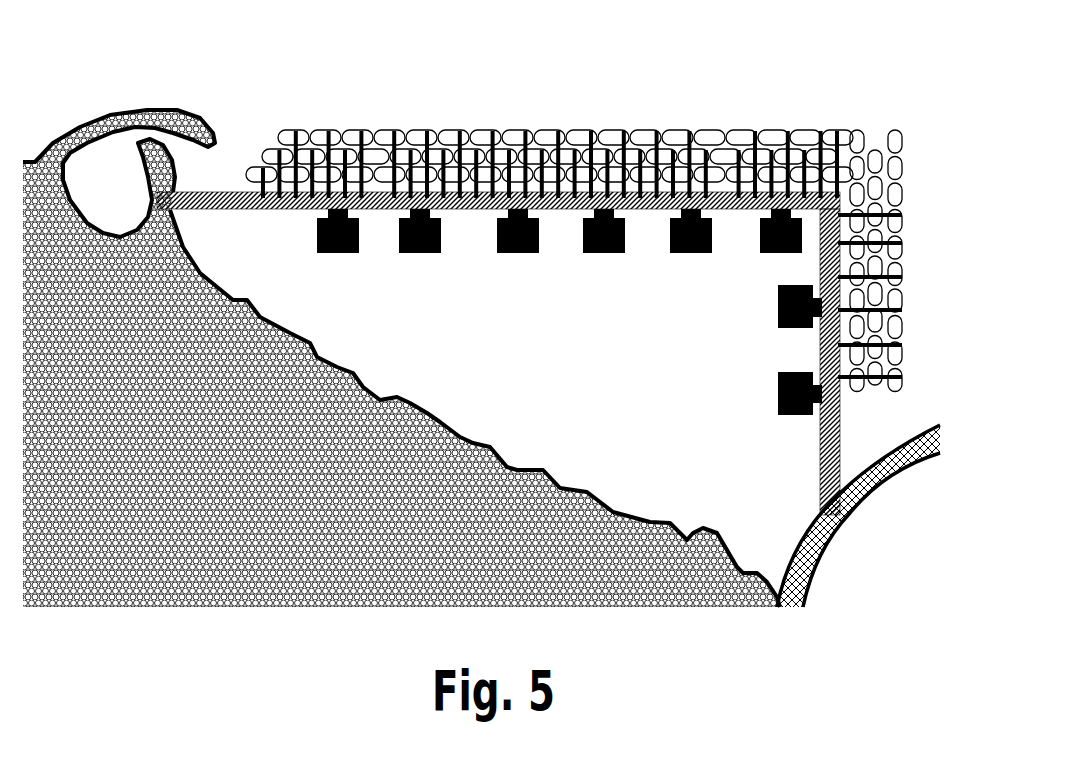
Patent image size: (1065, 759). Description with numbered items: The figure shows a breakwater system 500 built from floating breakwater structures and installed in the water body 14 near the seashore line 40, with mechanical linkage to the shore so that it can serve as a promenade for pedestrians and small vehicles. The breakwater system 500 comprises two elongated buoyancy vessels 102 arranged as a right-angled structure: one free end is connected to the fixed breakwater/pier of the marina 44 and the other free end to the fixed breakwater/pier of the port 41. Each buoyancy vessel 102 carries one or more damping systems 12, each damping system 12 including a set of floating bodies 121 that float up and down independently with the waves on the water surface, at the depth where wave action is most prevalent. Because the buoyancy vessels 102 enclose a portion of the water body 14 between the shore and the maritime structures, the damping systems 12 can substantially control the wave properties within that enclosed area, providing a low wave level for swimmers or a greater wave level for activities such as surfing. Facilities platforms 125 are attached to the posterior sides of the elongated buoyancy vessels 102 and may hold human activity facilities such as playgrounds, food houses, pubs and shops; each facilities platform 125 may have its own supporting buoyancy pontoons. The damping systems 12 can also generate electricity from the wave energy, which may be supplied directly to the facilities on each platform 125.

The breakwater system 500 is at (398, 77).
The floating bodies 121 is at (383, 130).
The damping system 12 is at (718, 127).
The fixed breakwater/pier of marina 44 is at (114, 189).
The elongated buoyancy vessels 102 is at (207, 210).
The water body 14 is at (538, 364).
The facilities platforms 125 is at (778, 305).
The seashore line 40 is at (166, 504).
The fixed breakwater/pier of port 41 is at (894, 579).